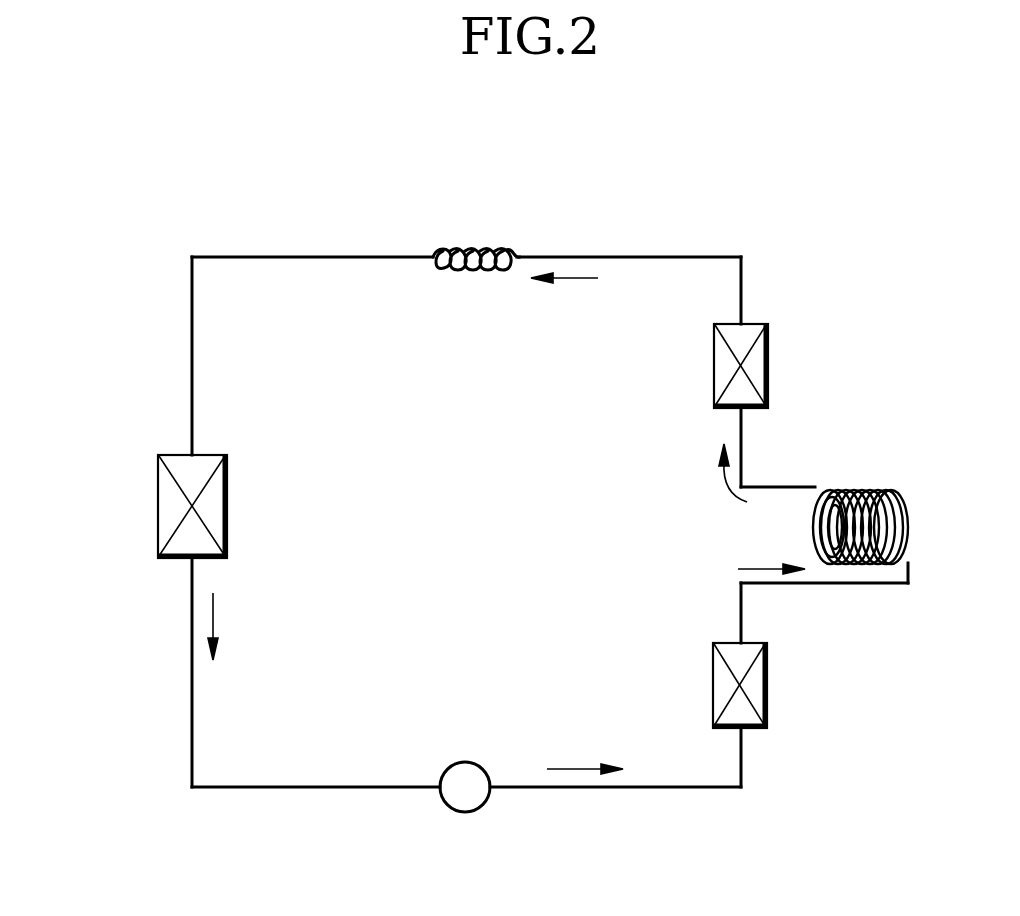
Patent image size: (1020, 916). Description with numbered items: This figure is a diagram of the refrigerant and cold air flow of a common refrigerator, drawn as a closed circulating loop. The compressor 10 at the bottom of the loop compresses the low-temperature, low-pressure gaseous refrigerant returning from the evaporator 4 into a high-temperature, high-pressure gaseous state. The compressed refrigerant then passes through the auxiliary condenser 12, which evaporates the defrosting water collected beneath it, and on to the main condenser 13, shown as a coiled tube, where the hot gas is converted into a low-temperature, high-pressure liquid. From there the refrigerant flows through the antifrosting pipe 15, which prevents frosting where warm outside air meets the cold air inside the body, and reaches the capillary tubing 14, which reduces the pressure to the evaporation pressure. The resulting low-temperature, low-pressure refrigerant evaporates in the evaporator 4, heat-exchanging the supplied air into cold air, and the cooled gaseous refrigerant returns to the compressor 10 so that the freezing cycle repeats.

The evaporator 4 is at (158, 515).
The compressor 10 is at (465, 812).
The auxiliary condenser 12 is at (767, 688).
The main condenser 13 is at (883, 487).
The capillary tubing 14 is at (466, 252).
The antifrosting pipe 15 is at (768, 338).